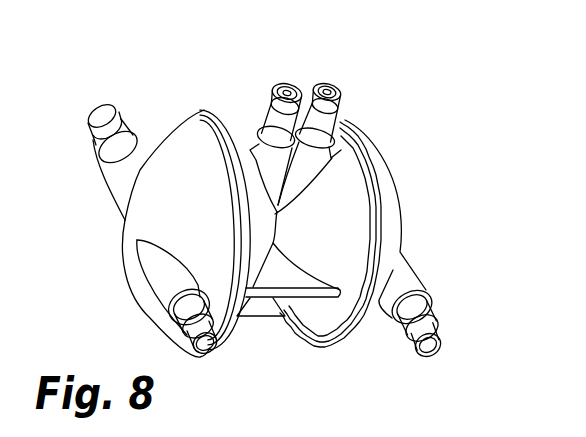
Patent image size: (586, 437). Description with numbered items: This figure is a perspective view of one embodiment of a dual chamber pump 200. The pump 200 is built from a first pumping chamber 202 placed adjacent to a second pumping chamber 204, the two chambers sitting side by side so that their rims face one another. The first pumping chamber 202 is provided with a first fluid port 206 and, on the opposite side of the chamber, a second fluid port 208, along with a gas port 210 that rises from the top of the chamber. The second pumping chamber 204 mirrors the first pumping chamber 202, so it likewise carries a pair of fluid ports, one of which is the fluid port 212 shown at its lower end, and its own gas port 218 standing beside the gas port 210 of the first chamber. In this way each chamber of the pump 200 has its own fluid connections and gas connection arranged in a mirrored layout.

The dual chamber pump 200 is at (438, 78).
The first pumping chamber 202 is at (170, 158).
The second pumping chamber 204 is at (392, 230).
The first fluid port 206 is at (205, 344).
The second fluid port 208 is at (95, 113).
The gas port 210 is at (292, 90).
The fluid port 212 is at (428, 346).
The gas port 218 is at (326, 90).